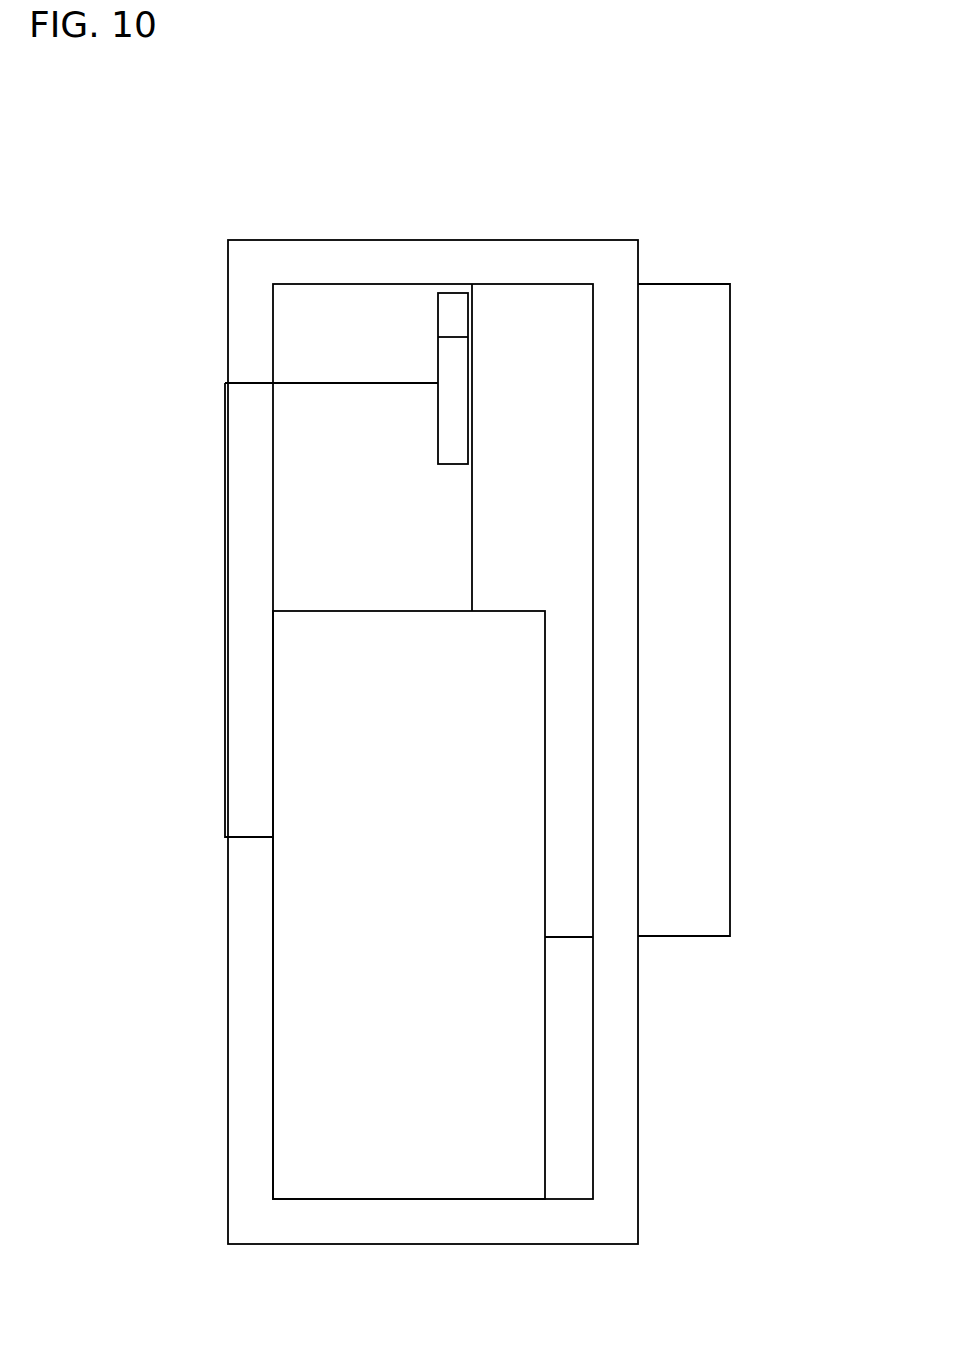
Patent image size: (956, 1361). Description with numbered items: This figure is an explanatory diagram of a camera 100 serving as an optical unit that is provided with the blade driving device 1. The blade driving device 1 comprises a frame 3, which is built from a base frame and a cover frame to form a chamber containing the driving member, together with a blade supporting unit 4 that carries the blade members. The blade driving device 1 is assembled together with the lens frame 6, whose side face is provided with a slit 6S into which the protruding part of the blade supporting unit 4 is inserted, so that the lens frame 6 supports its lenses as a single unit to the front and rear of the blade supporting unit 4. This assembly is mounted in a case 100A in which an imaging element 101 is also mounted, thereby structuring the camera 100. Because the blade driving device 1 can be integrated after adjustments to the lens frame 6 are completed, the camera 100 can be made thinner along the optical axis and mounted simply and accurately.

The camera 100 is at (678, 211).
The case 100A is at (639, 1142).
The imaging element 101 is at (687, 937).
The blade driving device 1 is at (304, 1210).
The frame 3 is at (363, 1200).
The blade supporting unit 4 is at (453, 293).
The lens frame 6 is at (562, 284).
The slit 6S is at (440, 423).